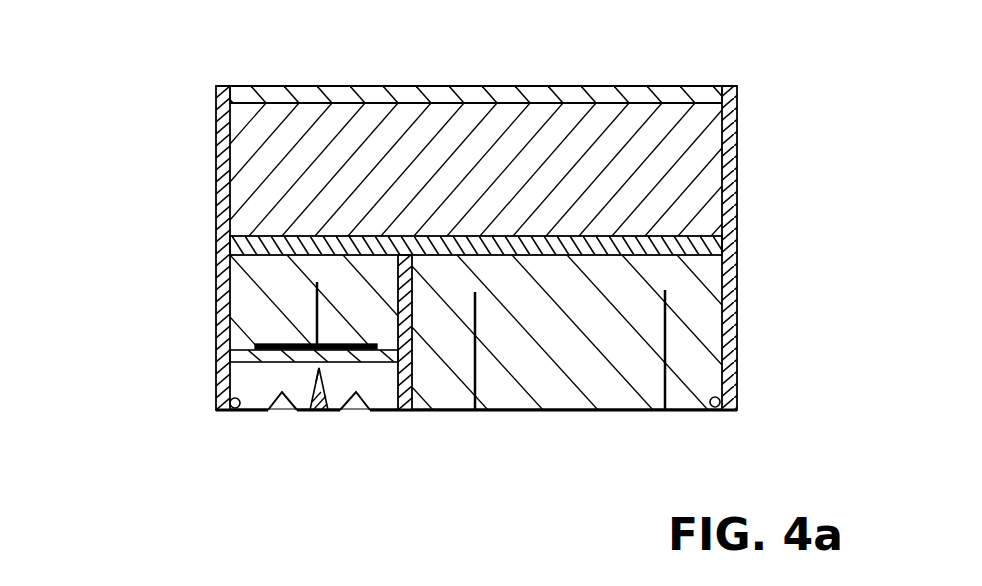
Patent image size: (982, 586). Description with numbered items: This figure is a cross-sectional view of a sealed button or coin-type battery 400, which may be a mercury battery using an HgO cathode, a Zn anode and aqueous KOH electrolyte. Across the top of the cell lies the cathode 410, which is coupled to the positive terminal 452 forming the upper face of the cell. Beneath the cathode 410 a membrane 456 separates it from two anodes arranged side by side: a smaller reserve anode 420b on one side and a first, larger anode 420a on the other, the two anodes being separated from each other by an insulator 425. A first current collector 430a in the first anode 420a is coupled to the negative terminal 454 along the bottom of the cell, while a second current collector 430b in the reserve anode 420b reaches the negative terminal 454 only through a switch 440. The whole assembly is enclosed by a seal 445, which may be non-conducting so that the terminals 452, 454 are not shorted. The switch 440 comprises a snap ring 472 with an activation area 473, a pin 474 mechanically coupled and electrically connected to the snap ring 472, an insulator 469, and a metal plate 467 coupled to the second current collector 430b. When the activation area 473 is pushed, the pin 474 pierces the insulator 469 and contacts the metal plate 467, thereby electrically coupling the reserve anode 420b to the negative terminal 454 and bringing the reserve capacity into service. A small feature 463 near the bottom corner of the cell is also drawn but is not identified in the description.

The battery 400 is at (202, 127).
The cathode 410 is at (708, 143).
The positive terminal 452 is at (668, 86).
The seal 445 is at (735, 183).
The membrane 456 is at (261, 245).
The first anode 420a is at (698, 307).
The reserve anode 420b is at (250, 305).
The first current collector 430a is at (665, 348).
The second current collector 430b is at (317, 297).
The insulator 425 is at (413, 382).
The metal plate 467 is at (262, 346).
The insulator 469 is at (247, 360).
The pin 474 is at (305, 384).
The activation area 473 is at (310, 408).
The snap ring 472 is at (363, 410).
The switch 440 is at (276, 420).
The negative terminal 454 is at (635, 410).
The sealing bead 463 is at (718, 408).